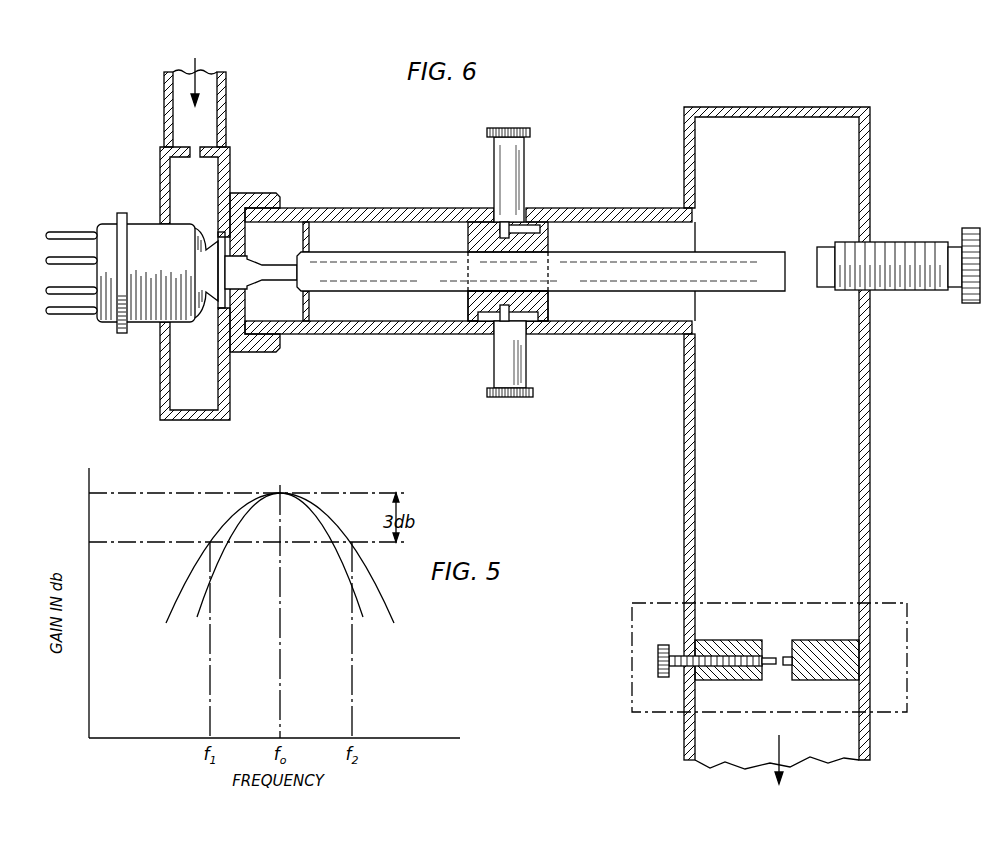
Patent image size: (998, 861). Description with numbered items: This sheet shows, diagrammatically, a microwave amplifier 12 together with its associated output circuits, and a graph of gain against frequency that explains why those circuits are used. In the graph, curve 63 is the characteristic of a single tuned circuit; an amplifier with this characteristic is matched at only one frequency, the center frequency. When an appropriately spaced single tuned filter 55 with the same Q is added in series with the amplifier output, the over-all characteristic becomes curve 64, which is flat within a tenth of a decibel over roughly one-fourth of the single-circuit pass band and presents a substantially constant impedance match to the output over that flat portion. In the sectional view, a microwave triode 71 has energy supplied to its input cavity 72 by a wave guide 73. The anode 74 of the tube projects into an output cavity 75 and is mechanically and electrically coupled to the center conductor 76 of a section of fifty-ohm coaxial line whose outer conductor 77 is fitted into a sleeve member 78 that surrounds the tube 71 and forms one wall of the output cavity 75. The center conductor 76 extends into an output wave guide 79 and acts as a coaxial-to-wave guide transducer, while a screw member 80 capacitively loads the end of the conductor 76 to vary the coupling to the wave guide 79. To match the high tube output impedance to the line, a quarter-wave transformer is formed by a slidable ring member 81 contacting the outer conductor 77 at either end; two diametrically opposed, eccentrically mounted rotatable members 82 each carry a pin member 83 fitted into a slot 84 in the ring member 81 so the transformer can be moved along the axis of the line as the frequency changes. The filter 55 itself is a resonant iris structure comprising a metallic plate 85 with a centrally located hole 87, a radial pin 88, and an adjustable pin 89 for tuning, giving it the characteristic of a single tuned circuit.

In FIG. 6, the amplifier 12 is at (86, 189).
In FIG. 6, the microwave triode 71 is at (148, 325).
In FIG. 6, the input cavity 72 is at (160, 185).
In FIG. 6, the wave guide 73 is at (164, 100).
In FIG. 6, the anode 74 is at (264, 282).
In FIG. 6, the output cavity 75 is at (283, 245).
In FIG. 6, the center conductor 76 is at (398, 258).
In FIG. 6, the outer conductor 77 is at (355, 210).
In FIG. 6, the sleeve member 78 is at (252, 194).
In FIG. 6, the output wave guide 79 is at (684, 135).
In FIG. 6, the screw member 80 is at (905, 246).
In FIG. 6, the slidable ring member 81 is at (468, 302).
In FIG. 6, the rotatable members 82 is at (524, 170).
In FIG. 6, the pin member 83 is at (541, 229).
In FIG. 6, the slot 84 is at (468, 235).
In FIG. 6, the metallic plate 85 is at (818, 642).
In FIG. 6, the centrally located hole 87 is at (776, 640).
In FIG. 6, the radial pin 88 is at (788, 667).
In FIG. 6, the adjustable pin 89 is at (773, 666).
In FIG. 6, the filter 55 is at (907, 632).
In FIG. 5, the curve 63 is at (226, 521).
In FIG. 5, the curve 64 is at (338, 558).